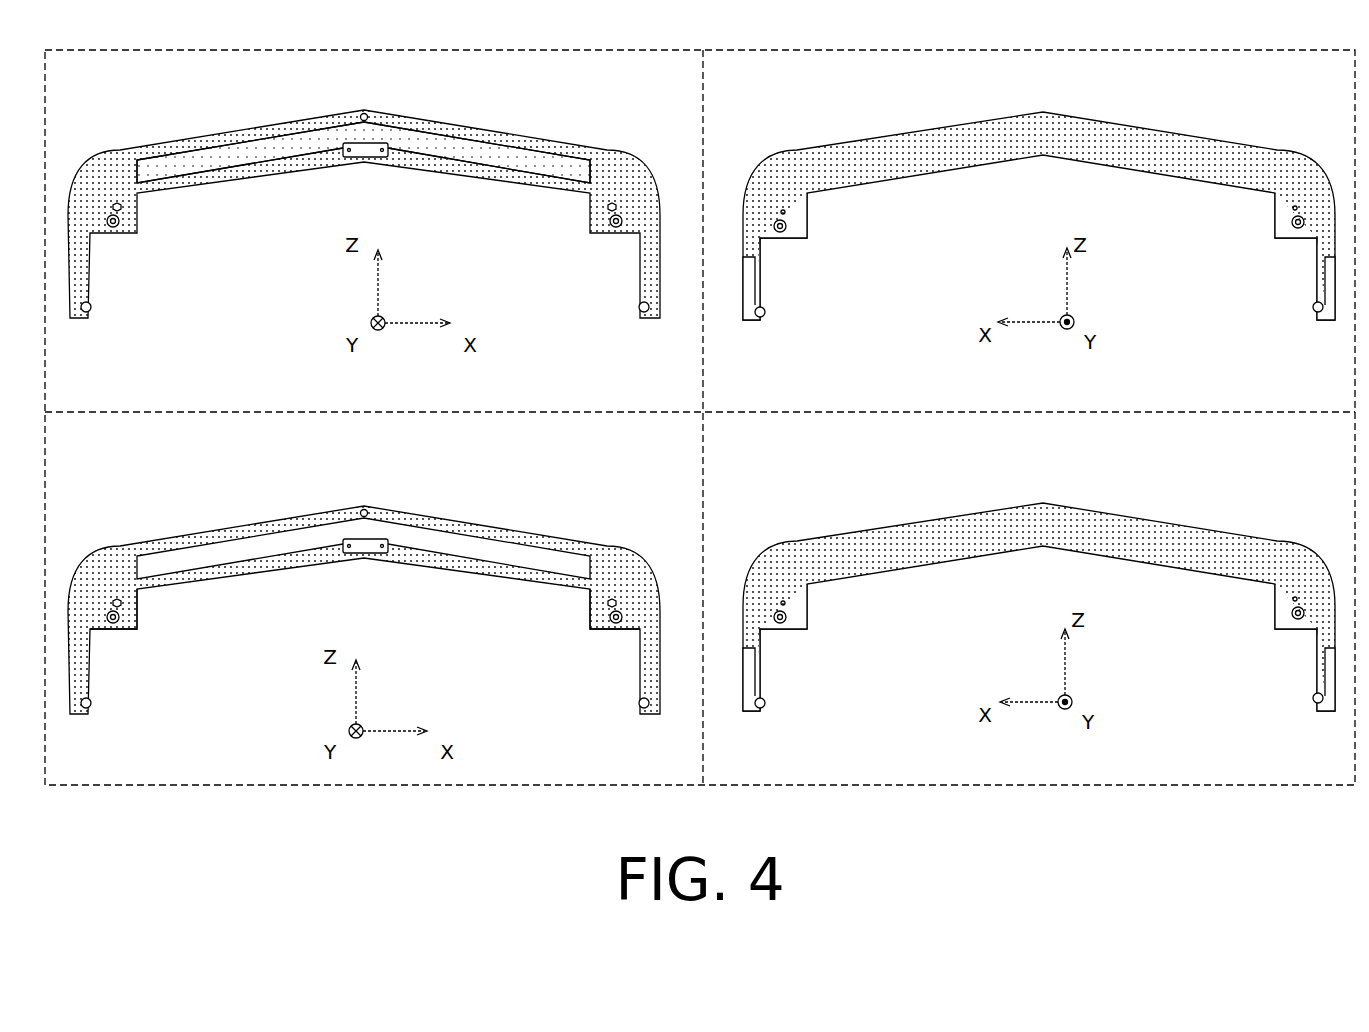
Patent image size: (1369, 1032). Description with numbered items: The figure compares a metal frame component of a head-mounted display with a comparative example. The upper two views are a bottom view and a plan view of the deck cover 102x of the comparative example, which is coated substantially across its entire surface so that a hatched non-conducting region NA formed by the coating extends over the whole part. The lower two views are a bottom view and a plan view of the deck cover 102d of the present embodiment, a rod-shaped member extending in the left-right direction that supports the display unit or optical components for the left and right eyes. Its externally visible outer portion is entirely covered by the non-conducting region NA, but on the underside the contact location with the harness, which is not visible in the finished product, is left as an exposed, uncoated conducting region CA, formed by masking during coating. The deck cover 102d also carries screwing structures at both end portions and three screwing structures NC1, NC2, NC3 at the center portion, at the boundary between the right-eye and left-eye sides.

The non-conducting region NA is at (701, 394).
The deck cover 102x is at (485, 148).
The deck cover 102d is at (701, 581).
The conducting region CA is at (363, 517).
The screwing structure NC1 is at (344, 481).
The screwing structure NC2 is at (328, 580).
The screwing structure NC3 is at (393, 588).